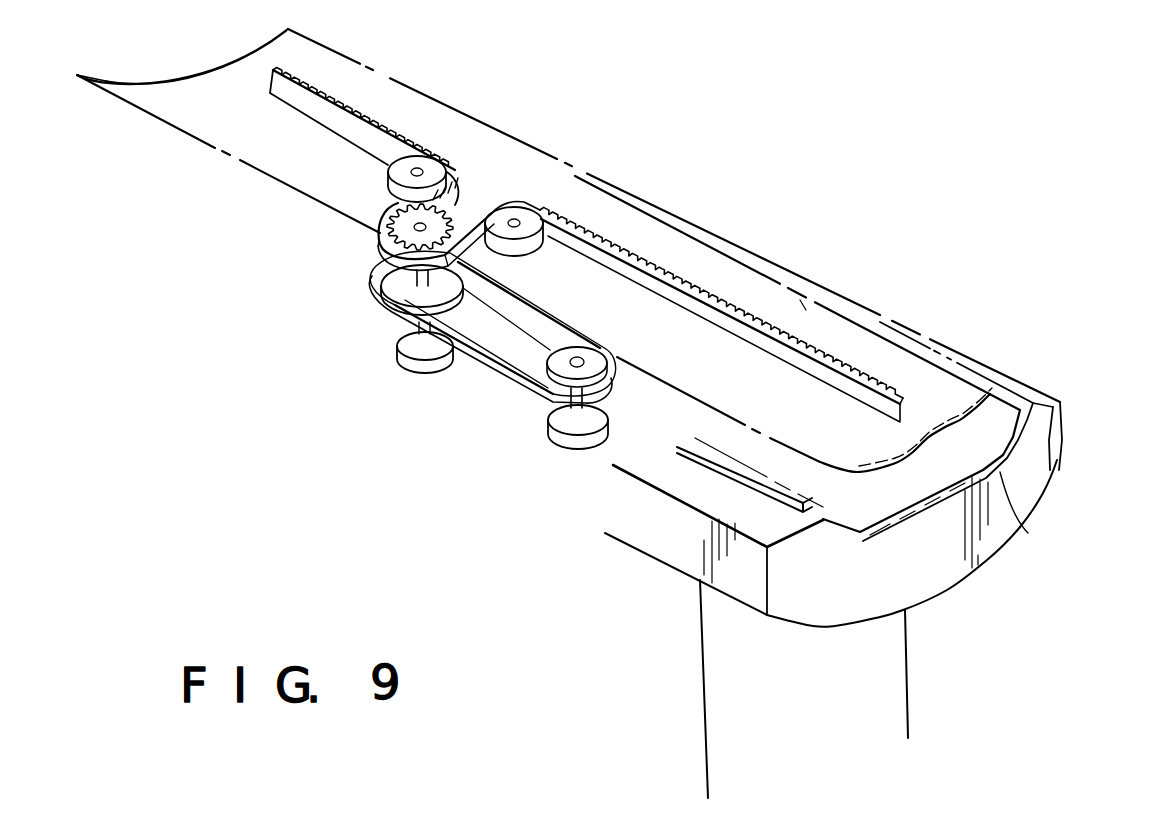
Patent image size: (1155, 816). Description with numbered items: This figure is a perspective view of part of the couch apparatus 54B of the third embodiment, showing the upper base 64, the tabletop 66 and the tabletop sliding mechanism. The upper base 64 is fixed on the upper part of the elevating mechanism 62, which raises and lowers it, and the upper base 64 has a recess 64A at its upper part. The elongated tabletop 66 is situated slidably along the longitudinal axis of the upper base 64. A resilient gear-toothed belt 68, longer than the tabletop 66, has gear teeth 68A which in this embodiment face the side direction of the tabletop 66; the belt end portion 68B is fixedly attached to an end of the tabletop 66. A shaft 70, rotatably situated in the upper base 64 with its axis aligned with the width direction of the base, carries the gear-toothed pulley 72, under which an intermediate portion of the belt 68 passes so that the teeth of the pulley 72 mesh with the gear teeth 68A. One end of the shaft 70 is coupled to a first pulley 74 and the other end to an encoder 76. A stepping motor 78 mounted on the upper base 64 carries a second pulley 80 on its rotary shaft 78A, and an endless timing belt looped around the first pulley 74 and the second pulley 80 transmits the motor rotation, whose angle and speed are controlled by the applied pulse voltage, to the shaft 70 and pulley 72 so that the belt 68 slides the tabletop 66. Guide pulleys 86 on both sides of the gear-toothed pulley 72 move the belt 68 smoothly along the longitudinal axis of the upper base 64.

The couch apparatus 54B is at (862, 223).
The elevating mechanism 62 is at (682, 653).
The upper base 64 is at (945, 563).
The recess 64A is at (1040, 513).
The tabletop 66 is at (803, 340).
The gear teeth 68A is at (594, 243).
The gear-toothed belt 68 is at (667, 262).
The fixedly attached belt portion 68B is at (997, 422).
The shaft 70 is at (382, 271).
The gear-toothed pulley 72 is at (437, 212).
The first pulley 74 is at (378, 300).
The encoder 76 is at (427, 365).
The stepping motor 78 is at (572, 443).
The rotary shaft 78A is at (585, 408).
The second pulley 80 is at (580, 357).
The guide pulleys 86 is at (390, 171).